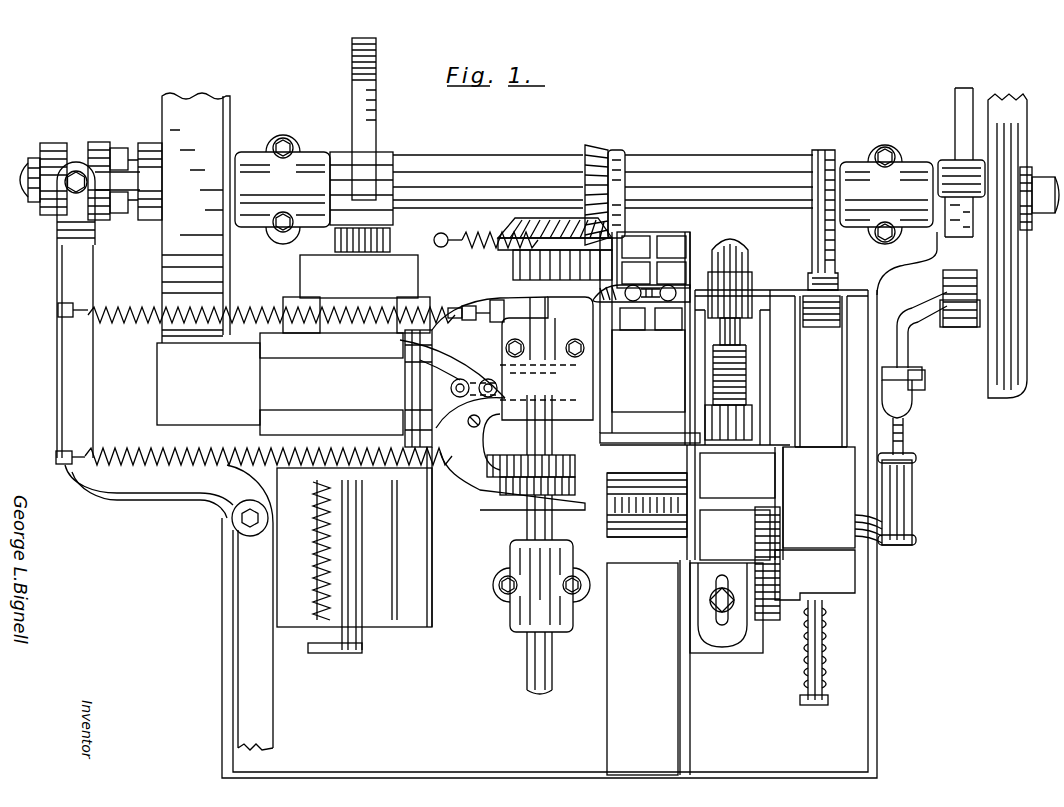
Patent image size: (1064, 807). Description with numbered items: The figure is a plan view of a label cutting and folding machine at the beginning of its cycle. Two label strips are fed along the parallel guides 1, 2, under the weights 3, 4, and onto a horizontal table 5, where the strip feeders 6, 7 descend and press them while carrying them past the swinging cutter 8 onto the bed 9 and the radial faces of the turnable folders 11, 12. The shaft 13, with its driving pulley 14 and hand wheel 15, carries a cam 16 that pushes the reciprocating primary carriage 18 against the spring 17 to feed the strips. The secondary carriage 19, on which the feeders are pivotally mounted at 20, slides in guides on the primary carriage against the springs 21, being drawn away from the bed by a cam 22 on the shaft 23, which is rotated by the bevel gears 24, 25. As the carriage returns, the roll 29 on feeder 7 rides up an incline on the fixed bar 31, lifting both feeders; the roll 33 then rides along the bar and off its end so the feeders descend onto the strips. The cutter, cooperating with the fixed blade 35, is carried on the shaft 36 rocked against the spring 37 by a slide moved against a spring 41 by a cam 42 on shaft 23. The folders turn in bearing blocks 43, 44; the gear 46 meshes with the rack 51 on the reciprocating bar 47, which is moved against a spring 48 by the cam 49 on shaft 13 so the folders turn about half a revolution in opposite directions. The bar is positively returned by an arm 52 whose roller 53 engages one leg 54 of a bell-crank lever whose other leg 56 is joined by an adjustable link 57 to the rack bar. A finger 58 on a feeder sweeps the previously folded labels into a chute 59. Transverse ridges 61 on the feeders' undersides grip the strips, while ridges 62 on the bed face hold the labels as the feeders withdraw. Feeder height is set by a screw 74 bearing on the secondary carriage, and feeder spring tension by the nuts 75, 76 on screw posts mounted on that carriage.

The guide 1 is at (636, 247).
The guide 2 is at (671, 247).
The weight 3 is at (636, 273).
The weight 4 is at (671, 273).
The horizontal table 5 is at (645, 338).
The strip feeder 6 is at (546, 358).
The strip feeder 7 is at (528, 412).
The swinging cutter 8 is at (695, 454).
The bed 9 is at (607, 508).
The turnable folder 11 is at (660, 478).
The turnable folder 12 is at (658, 540).
The shaft 13 is at (488, 180).
The driving pulley 14 is at (196, 218).
The hand wheel 15 is at (1007, 246).
The cam 16 is at (378, 136).
The spring 17 is at (335, 252).
The primary carriage 18 is at (350, 294).
The secondary carriage 19 is at (280, 384).
The pivot 20 is at (428, 300).
The springs 21 is at (250, 310).
The cam 22 is at (531, 456).
The shaft 23 is at (527, 527).
The bevel gear 24 is at (605, 152).
The bevel gear 25 is at (506, 228).
The roll 29 is at (497, 312).
The fixed bar 31 is at (621, 291).
The roll 33 is at (476, 304).
The fixed blade 35 is at (635, 443).
The shaft 36 is at (720, 340).
The spring 37 is at (714, 370).
The spring 41 is at (472, 248).
The cam 42 is at (562, 265).
The bearing block 43 is at (737, 475).
The bearing block 44 is at (735, 535).
The gear 46 is at (780, 528).
The reciprocating bar 47 is at (815, 428).
The spring 48 is at (830, 620).
The cam 49 is at (836, 262).
The rack 51 is at (825, 560).
The arm 52 is at (961, 206).
The roller 53 is at (962, 327).
The leg 54 is at (905, 318).
The leg 56 is at (922, 384).
The adjustable link 57 is at (912, 476).
The finger 58 is at (537, 492).
The chute 59 is at (648, 667).
The ridges 61 is at (500, 370).
The ridges 62 is at (647, 475).
The screw 74 is at (474, 426).
The nut 75 is at (460, 413).
The nut 76 is at (489, 382).